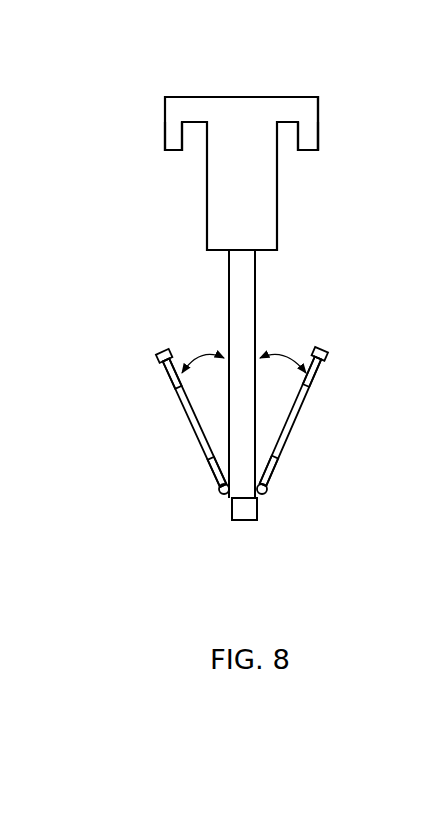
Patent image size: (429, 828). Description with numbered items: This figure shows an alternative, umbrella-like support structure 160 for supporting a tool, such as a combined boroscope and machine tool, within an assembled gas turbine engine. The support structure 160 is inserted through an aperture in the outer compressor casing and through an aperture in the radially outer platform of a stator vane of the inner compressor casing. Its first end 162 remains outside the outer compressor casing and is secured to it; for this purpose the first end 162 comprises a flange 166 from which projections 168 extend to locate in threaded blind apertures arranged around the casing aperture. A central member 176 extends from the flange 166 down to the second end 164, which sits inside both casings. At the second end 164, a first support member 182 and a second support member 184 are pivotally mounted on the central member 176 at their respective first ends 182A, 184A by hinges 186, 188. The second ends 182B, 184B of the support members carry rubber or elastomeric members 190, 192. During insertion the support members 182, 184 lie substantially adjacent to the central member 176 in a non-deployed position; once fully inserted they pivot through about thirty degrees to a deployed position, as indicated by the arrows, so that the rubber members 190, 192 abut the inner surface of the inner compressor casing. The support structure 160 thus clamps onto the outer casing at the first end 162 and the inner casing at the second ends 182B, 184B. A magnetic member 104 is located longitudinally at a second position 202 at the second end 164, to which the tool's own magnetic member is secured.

The magnetic member 104 is at (245, 517).
The support structure 160 is at (281, 240).
The first end 162 is at (298, 102).
The second end 164 is at (250, 472).
The flange 166 is at (192, 103).
The projections 168 is at (168, 147).
The central member 176 is at (252, 339).
The first support member 182 is at (197, 433).
The first end of first support member 182A is at (220, 486).
The second end of first support member 182B is at (174, 376).
The second support member 184 is at (307, 407).
The first end of second support member 184A is at (270, 484).
The second end of second support member 184B is at (311, 376).
The hinge 186 is at (224, 496).
The hinge 188 is at (261, 496).
The rubber member 190 is at (163, 352).
The rubber member 192 is at (325, 355).
The second position 202 is at (258, 503).